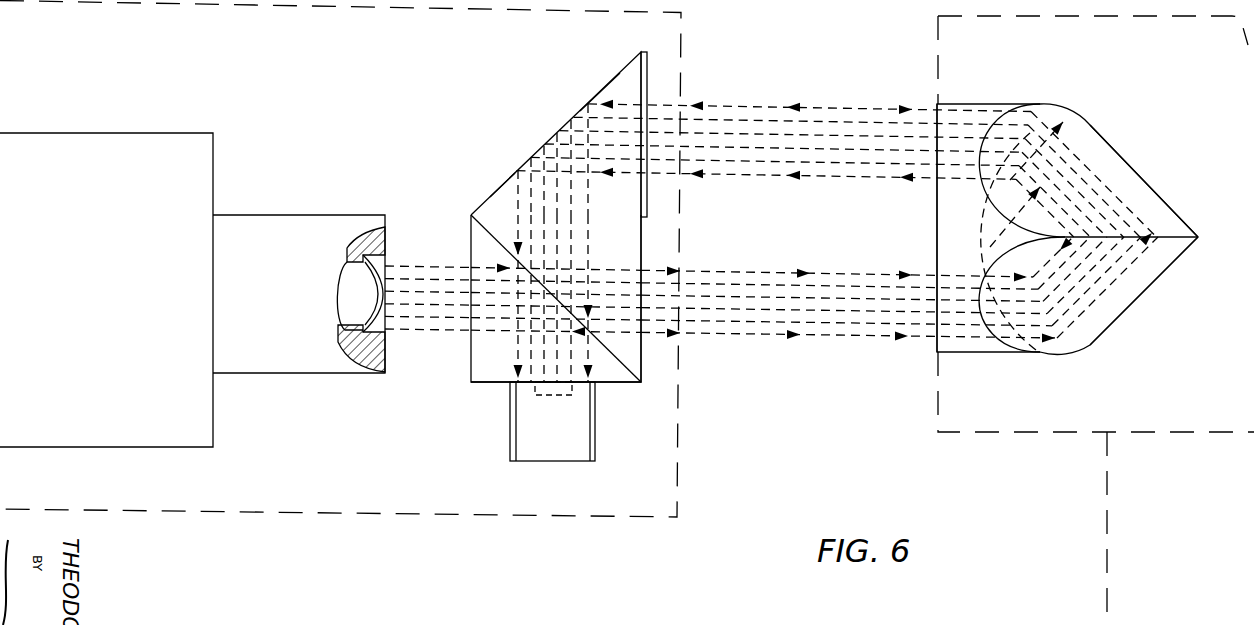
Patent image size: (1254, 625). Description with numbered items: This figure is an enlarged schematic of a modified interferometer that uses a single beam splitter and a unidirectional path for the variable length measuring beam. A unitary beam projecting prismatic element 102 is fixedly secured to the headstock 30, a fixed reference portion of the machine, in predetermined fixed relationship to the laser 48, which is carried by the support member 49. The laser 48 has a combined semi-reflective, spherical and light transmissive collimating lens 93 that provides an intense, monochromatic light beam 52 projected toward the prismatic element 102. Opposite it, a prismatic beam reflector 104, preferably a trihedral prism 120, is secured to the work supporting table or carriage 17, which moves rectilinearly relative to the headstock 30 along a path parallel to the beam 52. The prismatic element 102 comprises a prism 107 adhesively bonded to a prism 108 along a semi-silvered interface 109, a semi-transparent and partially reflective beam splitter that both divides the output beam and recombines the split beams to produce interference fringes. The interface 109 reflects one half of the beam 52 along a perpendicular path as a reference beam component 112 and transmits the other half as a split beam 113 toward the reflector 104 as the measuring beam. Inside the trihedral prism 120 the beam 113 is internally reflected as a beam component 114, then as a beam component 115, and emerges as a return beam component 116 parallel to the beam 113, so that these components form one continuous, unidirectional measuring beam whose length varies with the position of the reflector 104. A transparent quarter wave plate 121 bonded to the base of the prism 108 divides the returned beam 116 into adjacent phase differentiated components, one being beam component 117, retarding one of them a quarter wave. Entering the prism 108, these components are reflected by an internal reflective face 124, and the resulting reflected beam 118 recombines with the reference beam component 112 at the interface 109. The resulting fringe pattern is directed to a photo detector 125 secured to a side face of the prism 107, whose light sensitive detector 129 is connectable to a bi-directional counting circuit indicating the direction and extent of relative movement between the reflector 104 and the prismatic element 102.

The work supporting table or carriage 17 is at (932, 420).
The headstock 30 is at (684, 470).
The laser 48 is at (253, 232).
The support member 49 is at (145, 148).
The light beam 52 is at (436, 316).
The collimating lens 93 is at (373, 263).
The unitary beam projecting prismatic element 102 is at (645, 257).
The prismatic beam reflector 104 is at (933, 219).
The prism 107 is at (610, 372).
The prism 108 is at (641, 237).
The semi-silvered interface 109 is at (630, 362).
The reference beam component 112 is at (530, 345).
The split beam 113 is at (850, 305).
The beam component 114 is at (1087, 298).
The beam component 115 is at (1087, 190).
The return beam component 116 is at (808, 133).
The beam component 117 is at (613, 131).
The reflected beam 118 is at (547, 190).
The trihedral prism 120 is at (952, 240).
The quarter wave plate 121 is at (650, 98).
The internal reflective face 124 is at (502, 190).
The photo detector 125 is at (533, 445).
The light sensitive detector 129 is at (560, 395).